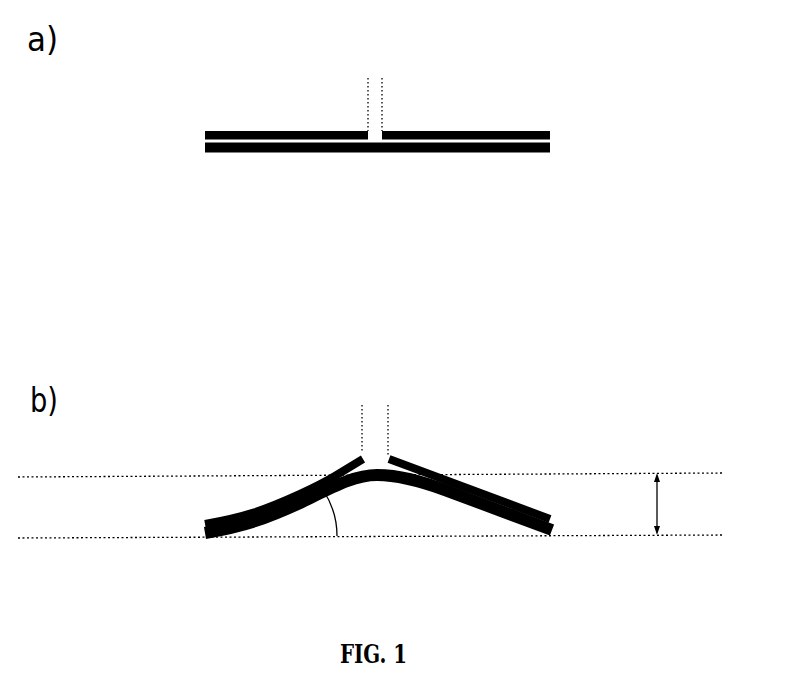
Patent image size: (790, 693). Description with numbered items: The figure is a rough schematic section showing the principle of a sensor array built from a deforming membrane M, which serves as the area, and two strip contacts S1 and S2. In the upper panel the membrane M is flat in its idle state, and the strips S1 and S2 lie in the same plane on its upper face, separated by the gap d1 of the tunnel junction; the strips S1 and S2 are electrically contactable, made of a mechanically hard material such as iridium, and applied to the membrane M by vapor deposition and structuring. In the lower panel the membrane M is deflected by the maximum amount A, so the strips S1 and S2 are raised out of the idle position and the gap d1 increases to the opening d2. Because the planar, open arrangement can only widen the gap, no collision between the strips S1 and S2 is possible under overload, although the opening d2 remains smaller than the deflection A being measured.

The first strip S1 is at (237, 129).
The second strip S2 is at (542, 127).
The membrane M is at (293, 156).
The gap in the tunnel junction d1 is at (305, 80).
The opening of the tunnel junction d2 is at (398, 422).
The deflection A is at (676, 502).